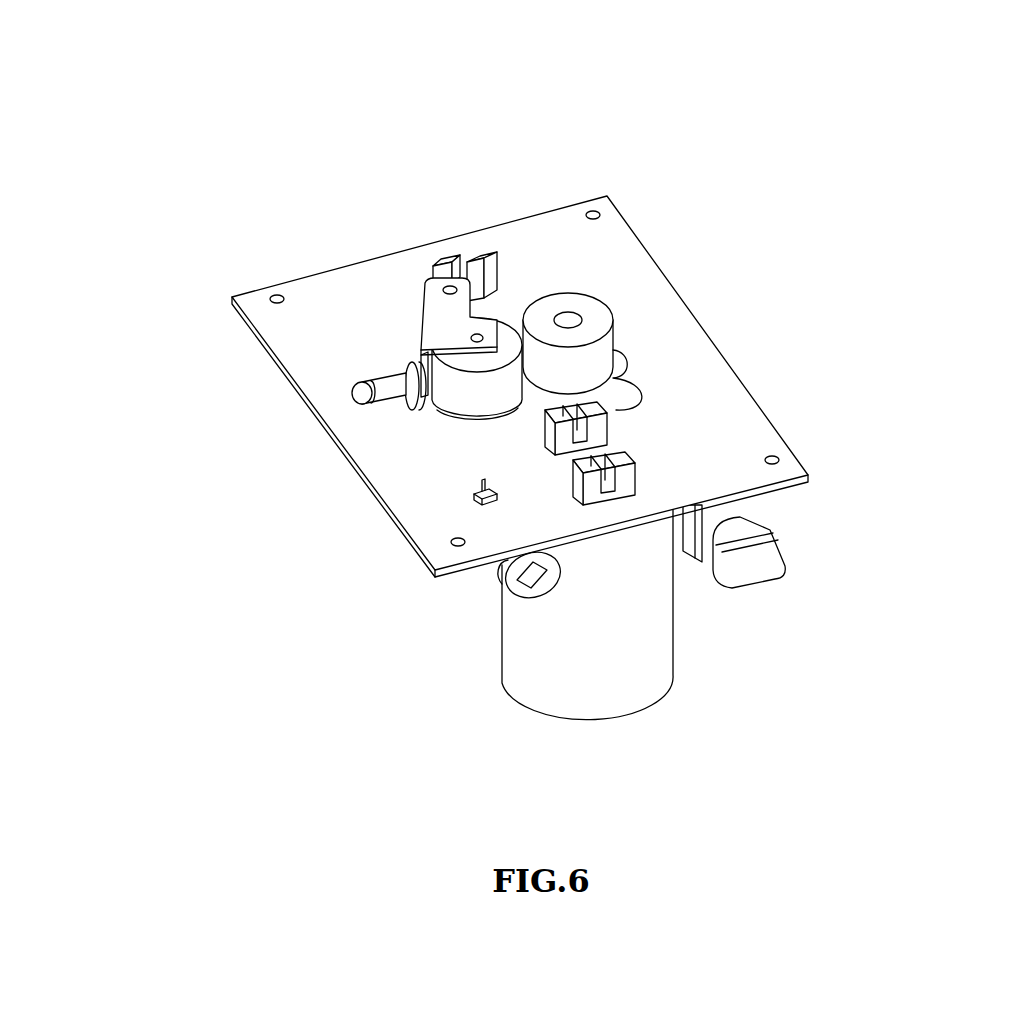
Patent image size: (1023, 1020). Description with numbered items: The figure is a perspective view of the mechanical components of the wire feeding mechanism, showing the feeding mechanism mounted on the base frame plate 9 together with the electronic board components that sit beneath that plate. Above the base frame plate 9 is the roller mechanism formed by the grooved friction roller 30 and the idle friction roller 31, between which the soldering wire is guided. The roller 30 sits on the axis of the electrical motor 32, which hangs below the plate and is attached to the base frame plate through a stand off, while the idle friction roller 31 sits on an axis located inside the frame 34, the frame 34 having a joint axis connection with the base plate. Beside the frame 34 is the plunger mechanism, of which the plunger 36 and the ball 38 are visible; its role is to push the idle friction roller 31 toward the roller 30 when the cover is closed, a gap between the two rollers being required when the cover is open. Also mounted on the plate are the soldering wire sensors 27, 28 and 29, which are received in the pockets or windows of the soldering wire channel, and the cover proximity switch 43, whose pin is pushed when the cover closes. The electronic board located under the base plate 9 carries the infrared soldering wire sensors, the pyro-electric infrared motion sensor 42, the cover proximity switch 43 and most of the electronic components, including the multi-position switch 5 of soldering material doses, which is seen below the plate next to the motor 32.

The multi-position switch 5 is at (792, 572).
The base frame plate 9 is at (545, 257).
The soldering wire sensor 27 is at (642, 475).
The soldering wire sensor 28 is at (617, 422).
The soldering wire sensor 29 is at (470, 247).
The grooved friction roller 30 is at (601, 309).
The idle friction roller 31 is at (452, 396).
The electrical motor 32 is at (637, 641).
The frame 34 is at (443, 314).
The plunger 36 is at (371, 372).
The ball 38 is at (348, 394).
The pyro-electric infrared motion sensor 42 is at (493, 590).
The cover proximity switch 43 is at (469, 505).